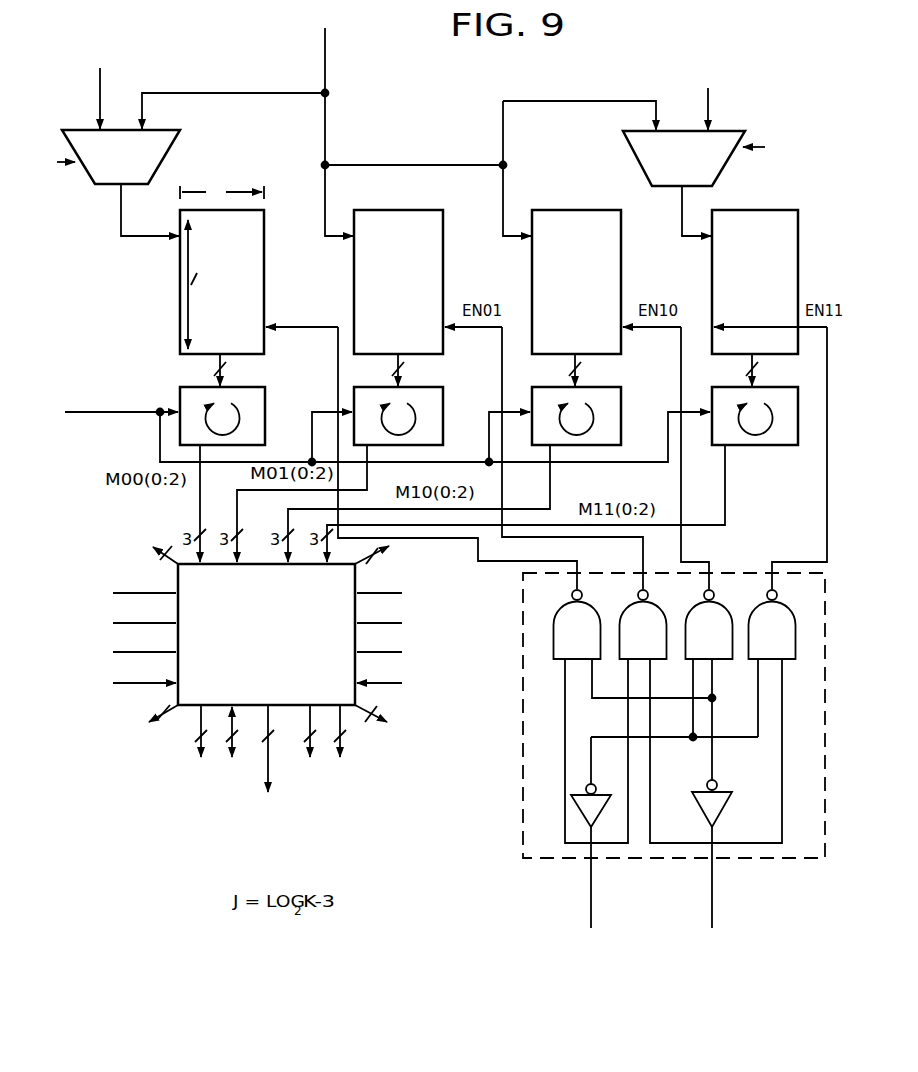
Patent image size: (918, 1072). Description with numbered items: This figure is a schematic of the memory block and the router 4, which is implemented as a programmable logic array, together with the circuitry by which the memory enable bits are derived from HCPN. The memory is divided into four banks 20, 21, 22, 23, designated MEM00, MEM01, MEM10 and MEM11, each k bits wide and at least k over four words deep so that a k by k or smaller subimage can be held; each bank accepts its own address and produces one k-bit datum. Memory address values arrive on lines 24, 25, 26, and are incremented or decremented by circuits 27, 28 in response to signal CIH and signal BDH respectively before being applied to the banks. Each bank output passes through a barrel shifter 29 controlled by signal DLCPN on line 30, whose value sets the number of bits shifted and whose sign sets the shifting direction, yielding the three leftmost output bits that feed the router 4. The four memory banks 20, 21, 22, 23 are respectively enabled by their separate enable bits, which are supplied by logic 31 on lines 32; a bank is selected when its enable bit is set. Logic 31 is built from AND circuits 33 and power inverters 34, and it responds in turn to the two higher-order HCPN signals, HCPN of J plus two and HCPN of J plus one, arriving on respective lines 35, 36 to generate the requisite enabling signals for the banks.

The router 4 is at (277, 685).
The memory bank MEM00 20 is at (237, 286).
The memory bank MEM01 21 is at (410, 286).
The memory bank MEM10 22 is at (587, 286).
The memory bank MEM11 23 is at (766, 286).
The memory address line 24 is at (325, 64).
The memory address line 25 is at (100, 100).
The memory address line 26 is at (708, 100).
The increment/decrement circuit 27 is at (102, 186).
The increment/decrement circuit 28 is at (630, 146).
The barrel shifter 29 is at (177, 396).
The DLCPN line 30 is at (112, 416).
The enable logic 31 is at (523, 762).
The enable lines 32 is at (318, 328).
The AND circuits 33 is at (561, 650).
The power inverters 34 is at (700, 808).
The HCPN(J+2) line 35 is at (712, 889).
The HCPN(J+1) line 36 is at (591, 889).